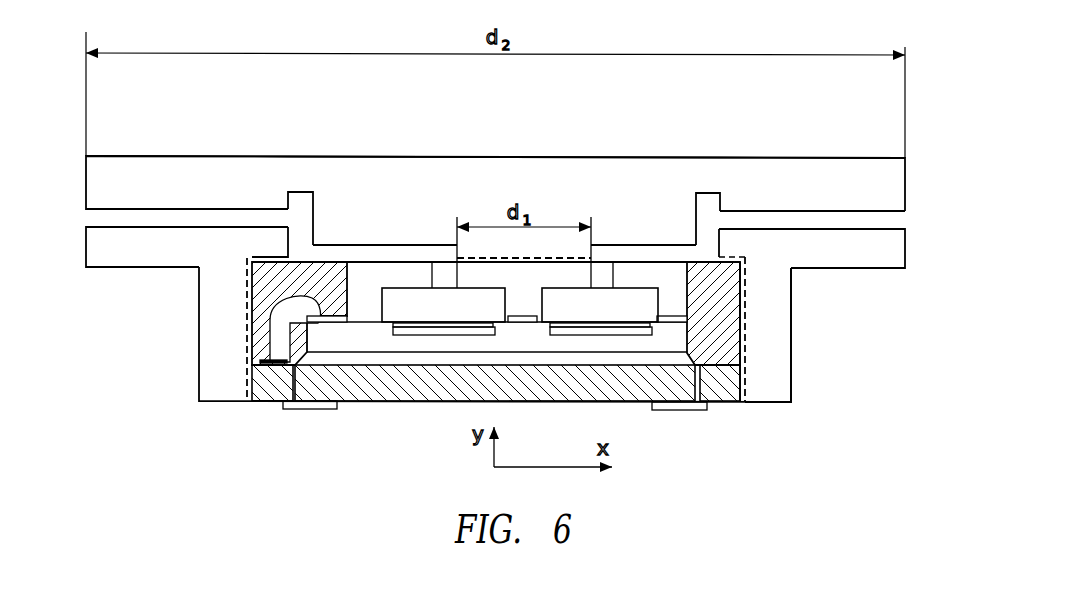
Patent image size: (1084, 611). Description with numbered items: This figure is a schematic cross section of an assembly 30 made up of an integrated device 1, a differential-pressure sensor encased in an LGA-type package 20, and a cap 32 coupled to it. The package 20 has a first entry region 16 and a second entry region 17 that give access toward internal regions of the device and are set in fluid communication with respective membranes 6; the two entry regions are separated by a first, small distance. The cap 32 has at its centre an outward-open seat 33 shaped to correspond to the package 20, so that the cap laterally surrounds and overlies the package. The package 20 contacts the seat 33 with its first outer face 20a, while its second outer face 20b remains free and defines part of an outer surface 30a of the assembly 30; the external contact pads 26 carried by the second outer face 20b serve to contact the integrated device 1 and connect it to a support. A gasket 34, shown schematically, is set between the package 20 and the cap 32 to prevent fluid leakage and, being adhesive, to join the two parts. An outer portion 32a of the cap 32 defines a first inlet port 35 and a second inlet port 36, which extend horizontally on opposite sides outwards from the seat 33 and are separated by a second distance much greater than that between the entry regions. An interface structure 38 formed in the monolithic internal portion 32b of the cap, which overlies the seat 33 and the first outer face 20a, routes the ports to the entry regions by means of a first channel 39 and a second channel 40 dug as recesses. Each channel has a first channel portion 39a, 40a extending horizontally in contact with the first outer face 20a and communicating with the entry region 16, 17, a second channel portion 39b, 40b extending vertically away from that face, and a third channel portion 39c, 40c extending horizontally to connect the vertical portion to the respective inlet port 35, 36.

The integrated device 1 is at (742, 345).
The membranes 6 is at (417, 327).
The first entry region 16 is at (453, 268).
The second entry region 17 is at (614, 266).
The package 20 is at (247, 331).
The first outer face 20a is at (265, 258).
The second outer face 20b is at (263, 403).
The external contact pads 26 is at (330, 412).
The assembly 30 is at (172, 405).
The outer surface 30a is at (765, 406).
The cap 32 is at (636, 178).
The outer portion 32a is at (381, 193).
The internal portion 32b is at (635, 237).
The seat 33 is at (746, 388).
The gasket 34 is at (247, 372).
The first inlet port 35 is at (185, 175).
The second inlet port 36 is at (838, 178).
The interface structure 38 is at (388, 223).
The first channel 39 is at (103, 215).
The first channel portion 39a is at (373, 258).
The second channel portion 39b is at (311, 208).
The third channel portion 39c is at (207, 213).
The second channel 40 is at (897, 222).
The first channel portion 40a is at (600, 258).
The second channel portion 40b is at (700, 205).
The third channel portion 40c is at (781, 226).